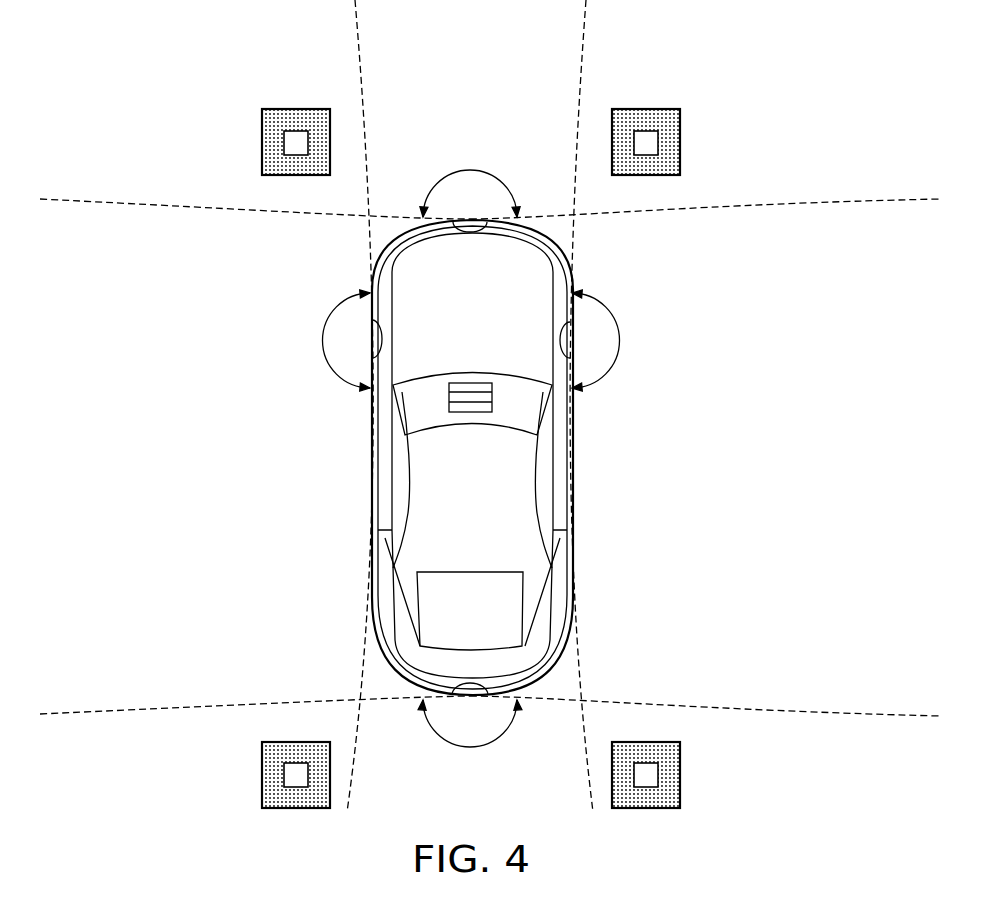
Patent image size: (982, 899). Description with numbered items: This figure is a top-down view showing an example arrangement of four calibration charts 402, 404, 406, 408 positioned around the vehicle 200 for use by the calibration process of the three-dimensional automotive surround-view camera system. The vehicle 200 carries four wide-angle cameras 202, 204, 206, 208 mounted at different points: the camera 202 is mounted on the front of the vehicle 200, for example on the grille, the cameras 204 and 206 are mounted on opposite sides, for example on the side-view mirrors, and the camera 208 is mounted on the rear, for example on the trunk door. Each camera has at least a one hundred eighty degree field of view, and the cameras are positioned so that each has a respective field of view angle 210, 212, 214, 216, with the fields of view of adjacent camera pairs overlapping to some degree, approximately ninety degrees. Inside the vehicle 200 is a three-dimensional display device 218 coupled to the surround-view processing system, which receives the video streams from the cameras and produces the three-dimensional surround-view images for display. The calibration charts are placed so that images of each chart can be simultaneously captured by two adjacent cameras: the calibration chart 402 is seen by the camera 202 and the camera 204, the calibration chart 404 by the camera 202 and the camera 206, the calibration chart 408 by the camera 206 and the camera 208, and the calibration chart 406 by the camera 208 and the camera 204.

The vehicle 200 is at (493, 529).
The camera 202 is at (472, 229).
The camera 204 is at (380, 336).
The camera 206 is at (560, 342).
The camera 208 is at (470, 683).
The field of view angle 210 is at (471, 171).
The field of view angle 212 is at (324, 340).
The field of view angle 214 is at (617, 340).
The field of view angle 216 is at (470, 745).
The 3D display device 218 is at (492, 397).
The calibration chart 402 is at (289, 99).
The calibration chart 404 is at (651, 99).
The calibration chart 406 is at (291, 820).
The calibration chart 408 is at (649, 820).